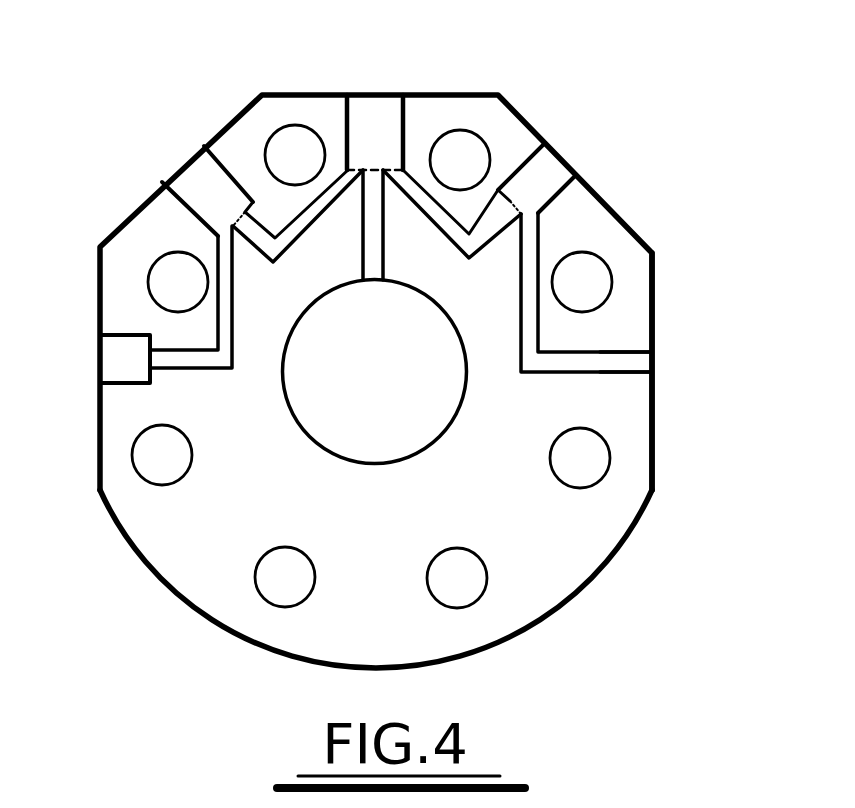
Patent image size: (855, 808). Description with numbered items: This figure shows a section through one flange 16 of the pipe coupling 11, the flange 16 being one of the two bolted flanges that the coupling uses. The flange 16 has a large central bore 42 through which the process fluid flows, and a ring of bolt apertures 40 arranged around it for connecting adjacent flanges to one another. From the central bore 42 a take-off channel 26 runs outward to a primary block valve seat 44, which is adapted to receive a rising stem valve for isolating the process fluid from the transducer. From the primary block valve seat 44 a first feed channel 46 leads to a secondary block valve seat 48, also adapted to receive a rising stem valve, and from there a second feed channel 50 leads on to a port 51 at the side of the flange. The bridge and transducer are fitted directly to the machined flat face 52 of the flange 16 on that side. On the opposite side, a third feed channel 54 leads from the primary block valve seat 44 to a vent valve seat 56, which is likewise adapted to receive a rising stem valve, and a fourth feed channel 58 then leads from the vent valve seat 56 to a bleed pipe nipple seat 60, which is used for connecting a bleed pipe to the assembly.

The pipe coupling 11 is at (196, 120).
The pipe flange 16 is at (565, 558).
The take-off channel 26 is at (372, 218).
The bolt apertures 40 is at (293, 150).
The central bore 42 is at (397, 413).
The primary block valve seat 44 is at (382, 122).
The first feed channel 46 is at (460, 232).
The secondary block valve seat 48 is at (550, 177).
The second feed channel 50 is at (572, 360).
The port 51 is at (640, 362).
The machined flat face 52 is at (652, 319).
The third feed channel 54 is at (280, 247).
The vent valve seat 56 is at (207, 190).
The fourth feed channel 58 is at (215, 356).
The bleed pipe nipple seat 60 is at (125, 360).